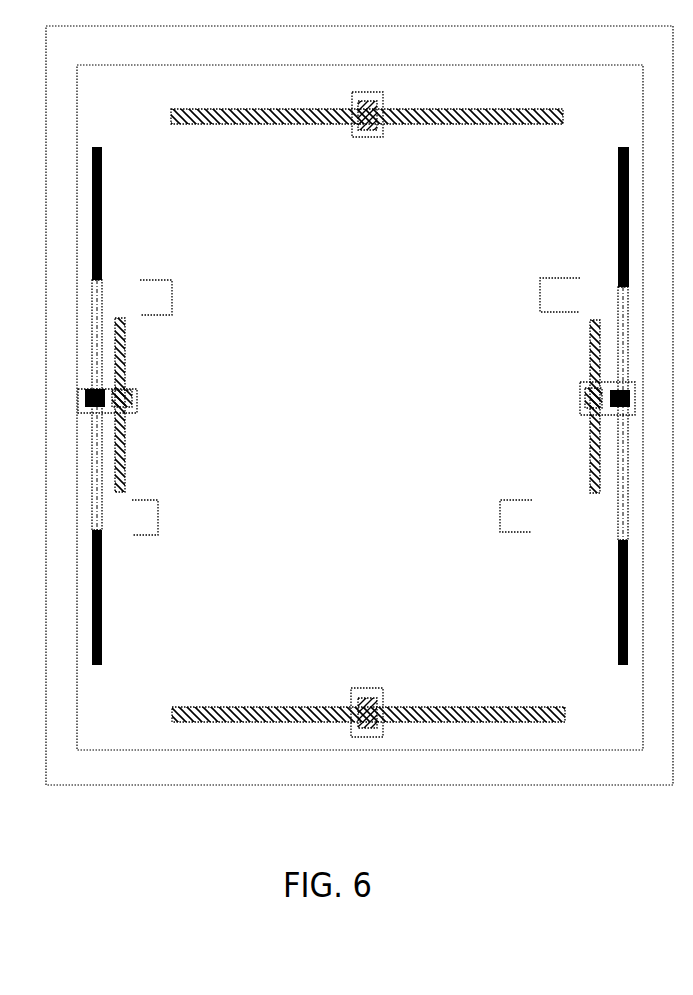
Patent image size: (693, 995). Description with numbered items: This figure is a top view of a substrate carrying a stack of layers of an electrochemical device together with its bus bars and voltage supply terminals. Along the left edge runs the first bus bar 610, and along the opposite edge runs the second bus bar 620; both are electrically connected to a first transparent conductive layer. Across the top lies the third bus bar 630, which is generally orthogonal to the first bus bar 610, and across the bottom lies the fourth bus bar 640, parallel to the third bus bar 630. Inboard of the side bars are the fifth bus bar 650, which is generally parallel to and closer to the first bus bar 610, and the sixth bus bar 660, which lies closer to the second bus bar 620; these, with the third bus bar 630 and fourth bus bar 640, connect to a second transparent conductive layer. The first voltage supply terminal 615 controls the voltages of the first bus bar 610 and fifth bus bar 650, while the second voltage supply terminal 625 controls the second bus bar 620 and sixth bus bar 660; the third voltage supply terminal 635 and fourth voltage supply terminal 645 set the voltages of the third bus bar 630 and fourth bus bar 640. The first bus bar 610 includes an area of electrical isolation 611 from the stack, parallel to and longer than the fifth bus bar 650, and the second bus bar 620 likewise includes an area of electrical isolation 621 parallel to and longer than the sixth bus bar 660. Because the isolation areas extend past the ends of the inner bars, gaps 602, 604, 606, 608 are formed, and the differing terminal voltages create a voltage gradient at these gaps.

The gap 602 is at (172, 293).
The gap 604 is at (158, 512).
The gap 606 is at (540, 295).
The gap 608 is at (500, 517).
The first bus bar 610 is at (113, 243).
The area of electrical isolation 611 is at (101, 500).
The first voltage supply terminal 615 is at (133, 388).
The second bus bar 620 is at (604, 218).
The area of electrical isolation 621 is at (627, 500).
The second voltage supply terminal 625 is at (580, 398).
The third bus bar 630 is at (275, 148).
The third voltage supply terminal 635 is at (377, 137).
The fourth bus bar 640 is at (312, 696).
The fourth voltage supply terminal 645 is at (373, 688).
The fifth bus bar 650 is at (150, 470).
The sixth bus bar 660 is at (570, 456).